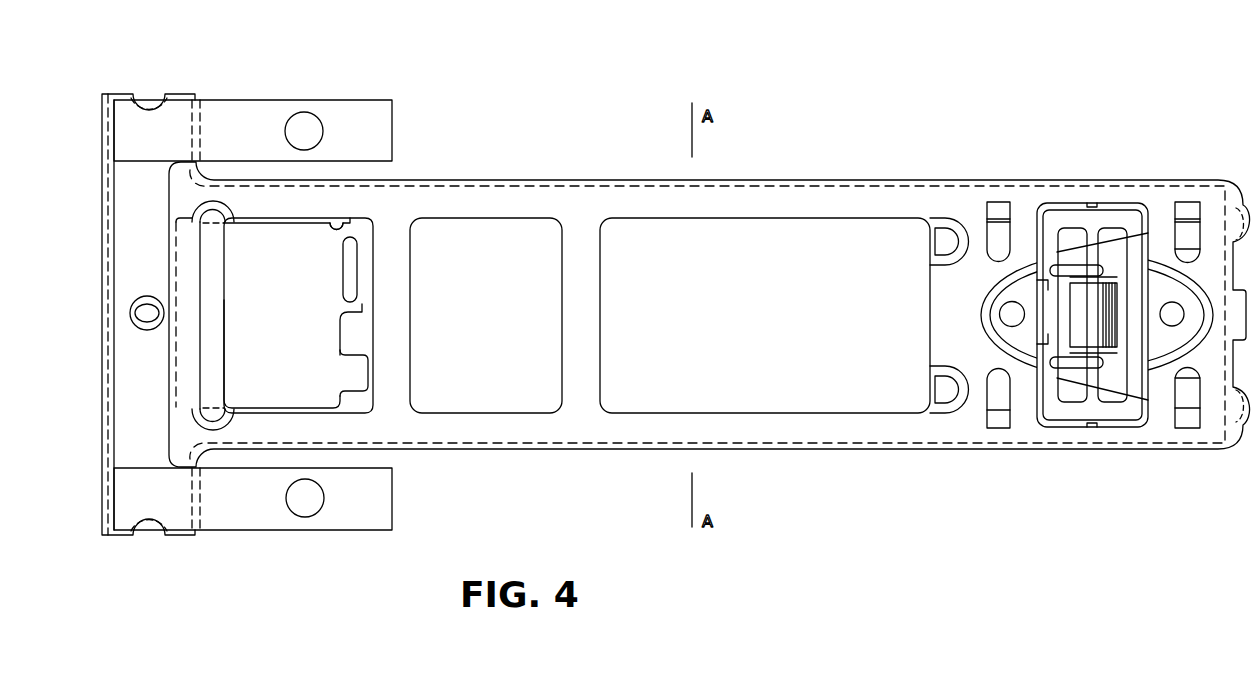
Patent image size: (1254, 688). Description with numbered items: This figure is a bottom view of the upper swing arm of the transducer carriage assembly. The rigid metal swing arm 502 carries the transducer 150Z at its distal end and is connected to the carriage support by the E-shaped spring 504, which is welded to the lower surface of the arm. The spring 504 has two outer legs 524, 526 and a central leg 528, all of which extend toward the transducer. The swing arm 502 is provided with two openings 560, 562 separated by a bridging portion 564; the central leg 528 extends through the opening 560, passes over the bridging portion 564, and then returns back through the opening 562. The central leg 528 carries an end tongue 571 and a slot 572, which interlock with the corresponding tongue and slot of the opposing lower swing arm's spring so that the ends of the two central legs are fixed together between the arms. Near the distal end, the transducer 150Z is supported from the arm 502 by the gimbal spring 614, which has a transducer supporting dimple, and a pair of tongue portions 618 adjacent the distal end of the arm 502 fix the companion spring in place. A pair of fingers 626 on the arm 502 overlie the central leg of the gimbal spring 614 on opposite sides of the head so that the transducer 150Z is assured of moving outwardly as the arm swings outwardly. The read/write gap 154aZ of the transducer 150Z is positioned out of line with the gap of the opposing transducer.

The swing arm 502 is at (865, 180).
The E-shaped spring 504 is at (262, 90).
The outer leg 524 is at (392, 492).
The outer leg 526 is at (373, 100).
The central leg 528 is at (302, 332).
The opening 560 is at (176, 248).
The opening 562 is at (345, 228).
The bridging portion 564 is at (213, 370).
The end tongue 571 is at (363, 370).
The slot 572 is at (349, 266).
The spring 614 is at (1127, 413).
The tongue portions 618 is at (1188, 397).
The fingers 626 is at (1072, 265).
The transducer 150Z is at (1088, 330).
The read/write gap 154aZ is at (1105, 315).